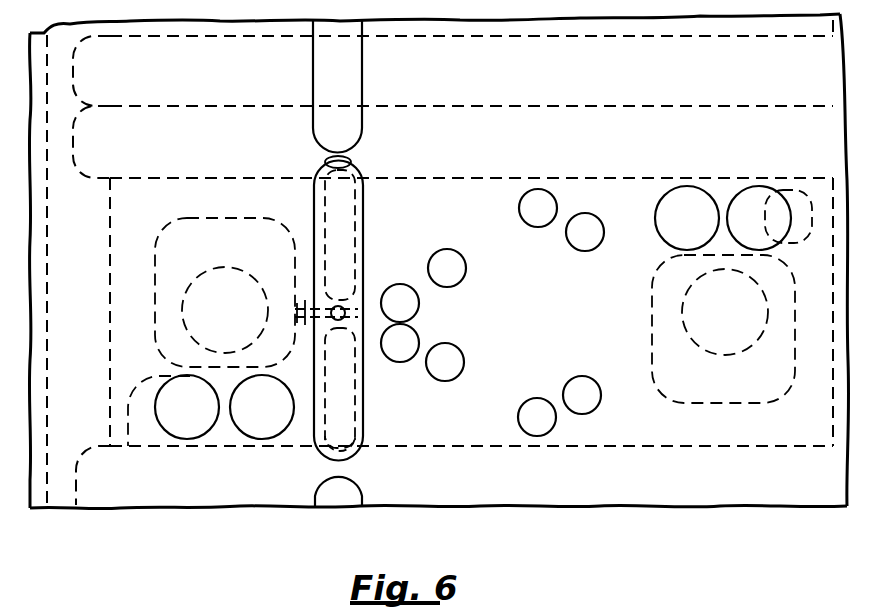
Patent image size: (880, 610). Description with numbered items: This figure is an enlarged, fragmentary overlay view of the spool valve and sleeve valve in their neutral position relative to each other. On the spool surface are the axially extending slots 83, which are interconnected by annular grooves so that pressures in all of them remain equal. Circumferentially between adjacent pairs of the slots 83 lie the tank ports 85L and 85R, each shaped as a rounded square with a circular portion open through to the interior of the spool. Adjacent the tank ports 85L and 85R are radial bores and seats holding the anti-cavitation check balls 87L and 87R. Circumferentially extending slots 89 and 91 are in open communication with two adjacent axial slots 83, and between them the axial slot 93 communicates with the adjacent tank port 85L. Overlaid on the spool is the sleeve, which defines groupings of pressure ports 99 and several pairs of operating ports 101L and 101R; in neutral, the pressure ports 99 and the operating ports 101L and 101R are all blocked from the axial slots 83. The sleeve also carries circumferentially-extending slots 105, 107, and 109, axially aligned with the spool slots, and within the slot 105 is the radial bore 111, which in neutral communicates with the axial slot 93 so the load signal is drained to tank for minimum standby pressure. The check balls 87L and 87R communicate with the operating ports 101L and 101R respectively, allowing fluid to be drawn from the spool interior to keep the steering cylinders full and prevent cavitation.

The axially extending slots 83 is at (166, 526).
The tank port 85L is at (249, 272).
The tank port 85R is at (748, 350).
The anti-cavitation check ball 87L is at (126, 390).
The anti-cavitation check ball 87R is at (810, 195).
The circumferentially extending slot 89 is at (343, 219).
The circumferentially extending slot 91 is at (352, 376).
The axial slot 93 is at (296, 300).
The pressure ports 99 is at (502, 244).
The operating ports 101L is at (228, 437).
The operating ports 101R is at (725, 192).
The circumferentially-extending slot 105 is at (344, 159).
The circumferentially-extending slot 107 is at (360, 62).
The circumferentially-extending slot 109 is at (357, 476).
The bore 111 is at (346, 308).